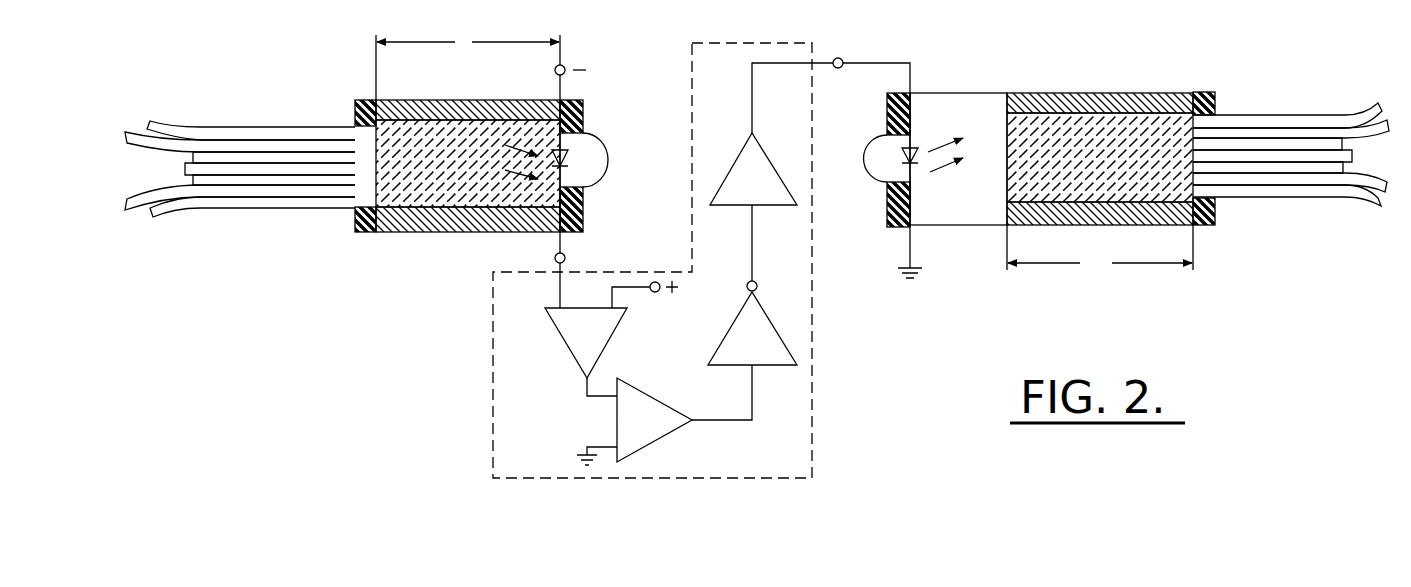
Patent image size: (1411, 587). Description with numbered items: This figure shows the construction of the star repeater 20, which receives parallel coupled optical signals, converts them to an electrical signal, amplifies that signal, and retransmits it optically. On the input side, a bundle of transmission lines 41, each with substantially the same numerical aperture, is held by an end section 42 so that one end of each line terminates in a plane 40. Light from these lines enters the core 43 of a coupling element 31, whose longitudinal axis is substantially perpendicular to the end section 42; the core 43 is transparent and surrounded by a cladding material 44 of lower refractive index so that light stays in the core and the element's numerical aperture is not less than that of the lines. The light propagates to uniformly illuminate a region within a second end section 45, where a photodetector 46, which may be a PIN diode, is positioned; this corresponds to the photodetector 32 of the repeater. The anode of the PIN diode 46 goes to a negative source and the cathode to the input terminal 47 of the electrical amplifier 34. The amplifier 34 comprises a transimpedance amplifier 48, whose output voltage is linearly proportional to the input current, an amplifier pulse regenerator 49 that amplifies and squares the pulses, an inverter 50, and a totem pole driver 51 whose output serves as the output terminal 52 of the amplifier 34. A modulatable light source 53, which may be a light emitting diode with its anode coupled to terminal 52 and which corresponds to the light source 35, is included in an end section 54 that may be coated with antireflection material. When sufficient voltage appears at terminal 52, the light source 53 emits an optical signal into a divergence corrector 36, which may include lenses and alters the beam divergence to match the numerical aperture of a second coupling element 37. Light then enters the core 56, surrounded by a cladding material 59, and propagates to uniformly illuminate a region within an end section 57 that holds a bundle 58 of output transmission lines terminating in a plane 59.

The star repeater 20 is at (648, 23).
The coupling element 31 is at (474, 149).
The photodetector 32 is at (597, 171).
The electrical amplifier 34 is at (707, 252).
The modulatable light source 35 is at (887, 160).
The divergence correction element 36 is at (952, 92).
The coupling element 37 is at (1126, 160).
The plane 40 is at (376, 190).
The bundle of transmission lines 41 is at (286, 220).
The end section 42 is at (360, 97).
The core 43 is at (435, 174).
The cladding material 44 is at (528, 230).
The end section 45 is at (583, 120).
The photodetector 46 is at (588, 173).
The input terminal 47 is at (566, 257).
The transimpedance amplifier 48 is at (608, 343).
The amplifier pulse regenerator 49 is at (672, 431).
The inverter 50 is at (770, 321).
The totem pole driver 51 is at (774, 168).
The output terminal 52 is at (840, 58).
The modulatable light source 53 is at (917, 165).
The end section 54 is at (888, 112).
The core 56 is at (1070, 164).
The end section 57 is at (1200, 92).
The bundle of output transmission lines 58 is at (1306, 203).
The cladding material 59 is at (1037, 92).